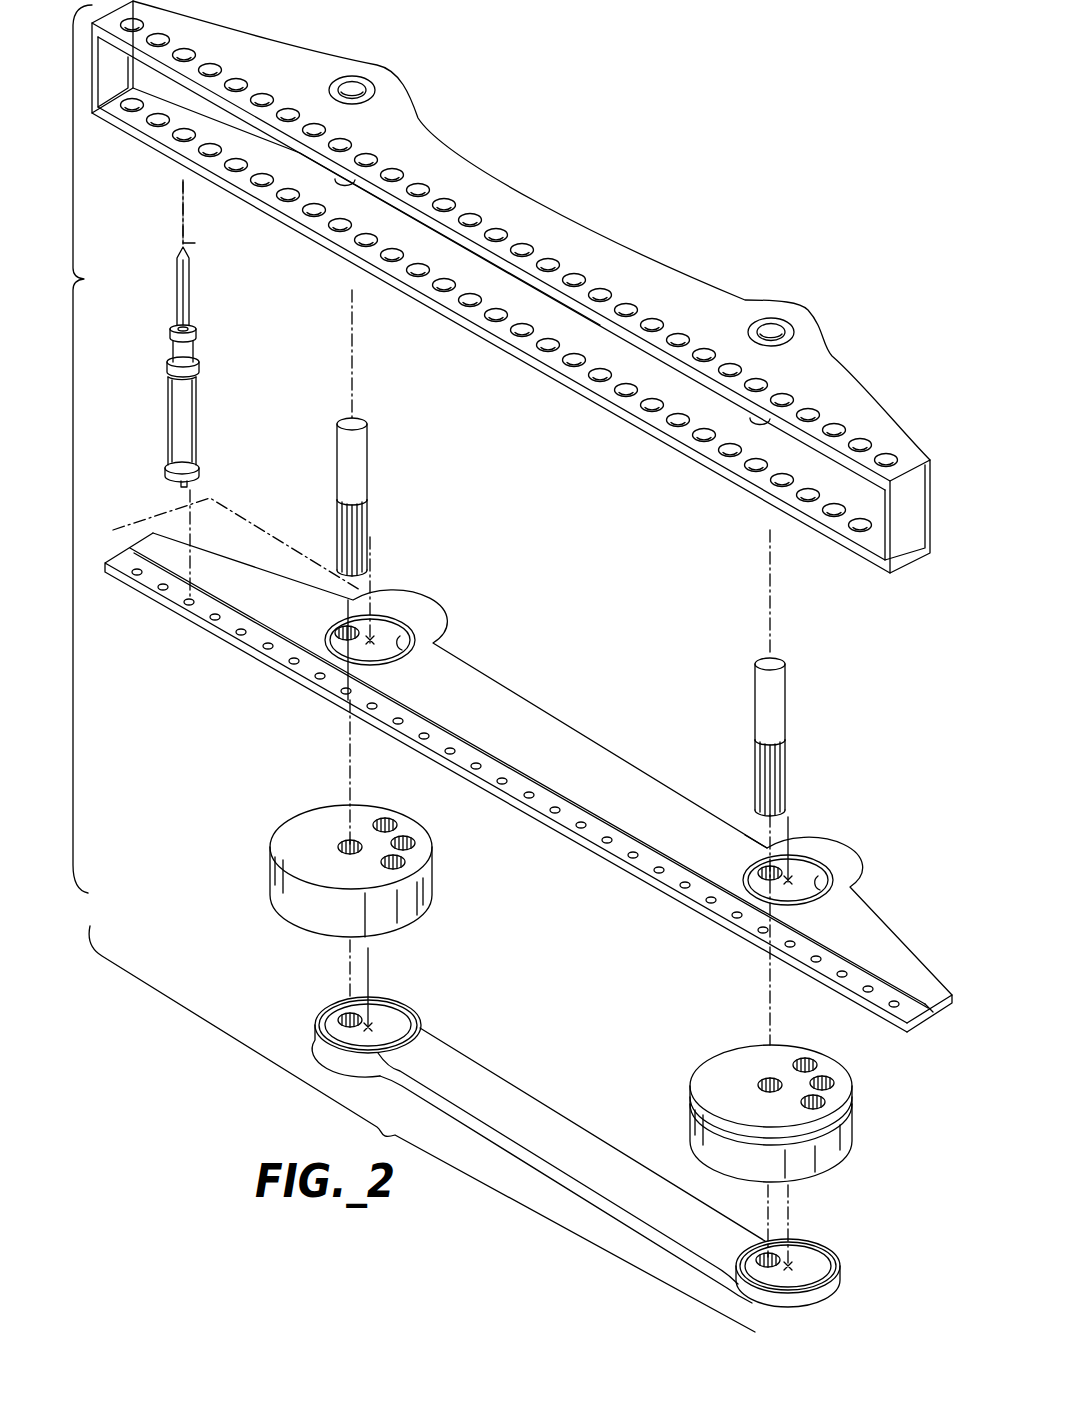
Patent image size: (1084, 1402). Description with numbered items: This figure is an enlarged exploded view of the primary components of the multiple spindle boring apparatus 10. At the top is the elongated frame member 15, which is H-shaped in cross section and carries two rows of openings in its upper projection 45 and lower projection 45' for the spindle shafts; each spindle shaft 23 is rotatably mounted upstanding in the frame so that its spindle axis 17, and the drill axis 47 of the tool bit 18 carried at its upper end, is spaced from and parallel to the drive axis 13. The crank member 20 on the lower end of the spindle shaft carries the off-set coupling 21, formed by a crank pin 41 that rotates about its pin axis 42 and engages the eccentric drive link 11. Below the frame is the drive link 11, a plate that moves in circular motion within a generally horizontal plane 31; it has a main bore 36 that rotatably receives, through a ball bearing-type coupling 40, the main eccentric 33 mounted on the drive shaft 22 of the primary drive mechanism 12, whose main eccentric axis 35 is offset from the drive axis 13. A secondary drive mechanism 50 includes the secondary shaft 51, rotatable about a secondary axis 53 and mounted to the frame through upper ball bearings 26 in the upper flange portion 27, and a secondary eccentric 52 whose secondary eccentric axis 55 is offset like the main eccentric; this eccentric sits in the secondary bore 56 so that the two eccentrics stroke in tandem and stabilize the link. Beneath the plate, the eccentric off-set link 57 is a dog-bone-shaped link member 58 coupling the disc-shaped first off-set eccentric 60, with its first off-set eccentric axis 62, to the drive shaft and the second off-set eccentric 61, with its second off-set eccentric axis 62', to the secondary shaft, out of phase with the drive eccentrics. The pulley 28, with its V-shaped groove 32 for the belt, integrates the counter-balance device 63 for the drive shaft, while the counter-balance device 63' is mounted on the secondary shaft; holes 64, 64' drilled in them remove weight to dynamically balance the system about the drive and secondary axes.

The boring apparatus 10 is at (99, 449).
The eccentric drive link 11 is at (528, 782).
The primary drive mechanism 12 is at (506, 1129).
The drive axis 13 is at (796, 600).
The frame member 15 is at (511, 287).
The spindle axis 17 is at (192, 243).
The drill axis 47 is at (213, 256).
The tool bit 18 is at (189, 272).
The crank member 20 is at (196, 347).
The off-set coupling 21 is at (210, 468).
The drive shaft 22 is at (787, 700).
The spindle shaft 23 is at (197, 405).
The upper ball bearings 26 is at (370, 82).
The upper flange portion 27 is at (420, 117).
The pulley 28 is at (857, 1152).
The horizontal plane 31 is at (283, 516).
The V-shaped groove 32 is at (838, 1120).
The main eccentric 33 is at (805, 862).
The main eccentric axis 35 is at (792, 828).
The main bore 36 is at (820, 880).
The ball bearing-type coupling 40 is at (752, 862).
The crank pin 41 is at (195, 485).
The pin axis 42 is at (196, 538).
The upper projection 45 is at (509, 243).
The lower projection 45' is at (496, 315).
The secondary drive mechanism 50 is at (292, 713).
The secondary shaft 51 is at (369, 462).
The secondary eccentric 52 is at (385, 632).
The secondary axis 53 is at (358, 375).
The secondary eccentric axis 55 is at (374, 598).
The secondary bore 56 is at (403, 642).
The eccentric off-set link 57 is at (552, 1082).
The dog-bone-shaped link member 58 is at (553, 1122).
The first off-set eccentric 60 is at (820, 1258).
The second off-set eccentric 61 is at (398, 1010).
The first off-set eccentric axis 62 is at (822, 1223).
The second off-set eccentric axis 62' is at (407, 985).
The counter-balance device 63 is at (798, 998).
The counter-balance device 63' is at (345, 818).
The holes 64 is at (830, 1072).
The holes 64' is at (416, 832).